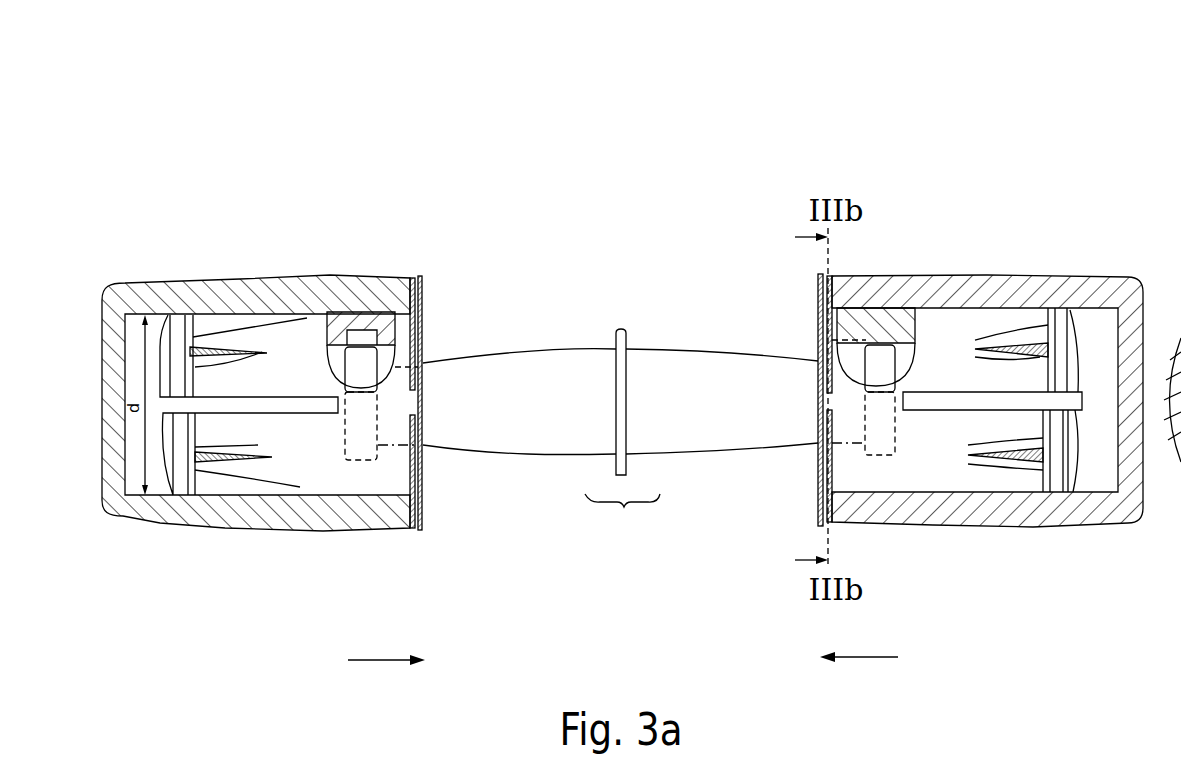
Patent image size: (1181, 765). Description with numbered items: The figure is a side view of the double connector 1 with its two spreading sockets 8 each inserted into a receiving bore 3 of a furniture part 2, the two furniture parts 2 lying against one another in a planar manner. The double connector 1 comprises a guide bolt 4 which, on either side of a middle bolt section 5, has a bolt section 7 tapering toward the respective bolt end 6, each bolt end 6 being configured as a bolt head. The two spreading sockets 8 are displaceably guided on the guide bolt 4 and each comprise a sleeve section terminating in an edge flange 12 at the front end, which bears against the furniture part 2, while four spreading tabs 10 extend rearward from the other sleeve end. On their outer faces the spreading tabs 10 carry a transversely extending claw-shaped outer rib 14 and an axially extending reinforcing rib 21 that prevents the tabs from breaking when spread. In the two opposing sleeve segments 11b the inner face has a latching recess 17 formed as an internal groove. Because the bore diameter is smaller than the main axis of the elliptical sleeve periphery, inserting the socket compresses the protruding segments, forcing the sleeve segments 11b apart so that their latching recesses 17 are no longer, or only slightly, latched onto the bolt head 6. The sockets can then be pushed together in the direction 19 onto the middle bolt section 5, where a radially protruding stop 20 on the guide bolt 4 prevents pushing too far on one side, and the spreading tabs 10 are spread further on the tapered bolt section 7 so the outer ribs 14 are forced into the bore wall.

The double connector 1 is at (406, 208).
The furniture part 2 is at (257, 297).
The receiving bore 3 is at (215, 333).
The guide bolt 4 is at (570, 335).
The middle bolt section 5 is at (622, 516).
The bolt end 6 is at (818, 344).
The bolt section 7 is at (534, 422).
The spreading socket 8 is at (262, 476).
The spreading tab 10 is at (1000, 343).
The sleeve segment 11b is at (866, 322).
The edge flange 12 is at (818, 282).
The outer rib 14 is at (1050, 325).
The latching recess 17 is at (885, 340).
The direction 19 is at (385, 665).
The stop 20 is at (618, 329).
The reinforcing rib 21 is at (1022, 340).